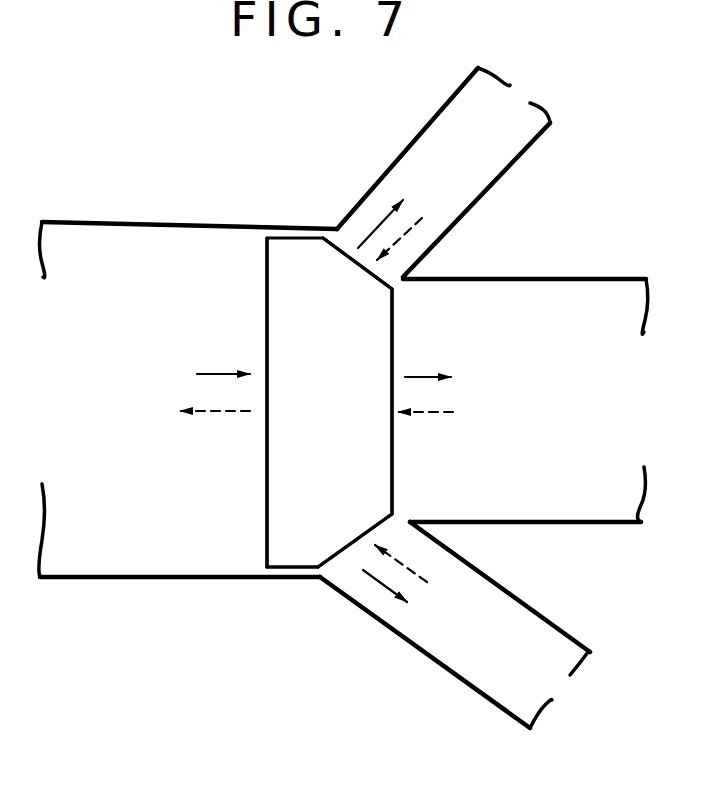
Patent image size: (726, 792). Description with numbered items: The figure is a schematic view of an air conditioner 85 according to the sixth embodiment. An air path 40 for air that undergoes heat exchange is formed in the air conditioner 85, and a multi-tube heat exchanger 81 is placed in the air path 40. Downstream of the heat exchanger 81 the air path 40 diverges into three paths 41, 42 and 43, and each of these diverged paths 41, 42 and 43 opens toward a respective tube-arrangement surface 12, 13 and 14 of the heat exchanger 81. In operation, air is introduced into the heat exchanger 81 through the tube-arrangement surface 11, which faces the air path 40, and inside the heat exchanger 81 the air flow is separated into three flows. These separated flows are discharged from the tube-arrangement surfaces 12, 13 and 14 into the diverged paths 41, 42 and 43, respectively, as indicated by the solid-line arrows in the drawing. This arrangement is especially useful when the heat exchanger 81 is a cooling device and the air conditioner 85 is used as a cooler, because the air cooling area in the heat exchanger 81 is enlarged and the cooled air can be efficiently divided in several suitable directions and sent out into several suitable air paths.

The air conditioner 85 is at (237, 197).
The air path 40 is at (188, 327).
The diverged path 41 is at (421, 163).
The diverged path 42 is at (581, 301).
The diverged path 43 is at (465, 650).
The tube-arrangement surface 11 is at (266, 472).
The tube-arrangement surface 12 is at (349, 250).
The tube-arrangement surface 13 is at (391, 476).
The tube-arrangement surface 14 is at (344, 558).
The multi-tube heat exchanger 81 is at (300, 530).